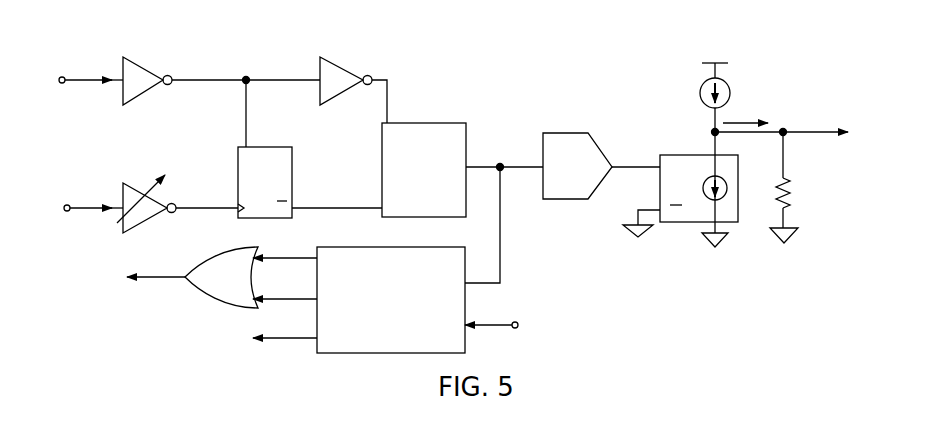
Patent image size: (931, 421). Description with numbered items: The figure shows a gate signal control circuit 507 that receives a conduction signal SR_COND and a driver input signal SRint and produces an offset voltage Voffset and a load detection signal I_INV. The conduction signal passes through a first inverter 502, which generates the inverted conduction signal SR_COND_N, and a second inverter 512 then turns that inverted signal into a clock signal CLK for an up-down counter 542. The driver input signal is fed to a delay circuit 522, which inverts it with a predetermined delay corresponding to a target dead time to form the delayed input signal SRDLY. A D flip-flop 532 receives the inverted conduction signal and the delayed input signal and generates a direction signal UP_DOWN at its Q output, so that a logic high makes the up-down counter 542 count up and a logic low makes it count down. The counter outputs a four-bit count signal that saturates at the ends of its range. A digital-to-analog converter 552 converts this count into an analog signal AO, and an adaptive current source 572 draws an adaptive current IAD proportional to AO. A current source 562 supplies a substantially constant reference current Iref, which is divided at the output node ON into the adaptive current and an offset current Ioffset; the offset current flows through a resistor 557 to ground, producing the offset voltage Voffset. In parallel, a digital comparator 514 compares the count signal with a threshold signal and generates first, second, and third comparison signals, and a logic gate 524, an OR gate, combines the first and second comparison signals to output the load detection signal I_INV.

The gate signal control circuit 507 is at (87, 45).
The first inverter 502 is at (138, 63).
The second inverter 512 is at (338, 63).
The delay circuit 522 is at (155, 217).
The logic gate 524 is at (203, 302).
The digital comparator 514 is at (345, 354).
The D flip-flop 532 is at (290, 148).
The up-down counter 542 is at (418, 123).
The digital-to-analog converter 552 is at (564, 133).
The current source 562 is at (729, 84).
The adaptive current source 572 is at (686, 223).
The resistor 557 is at (773, 184).